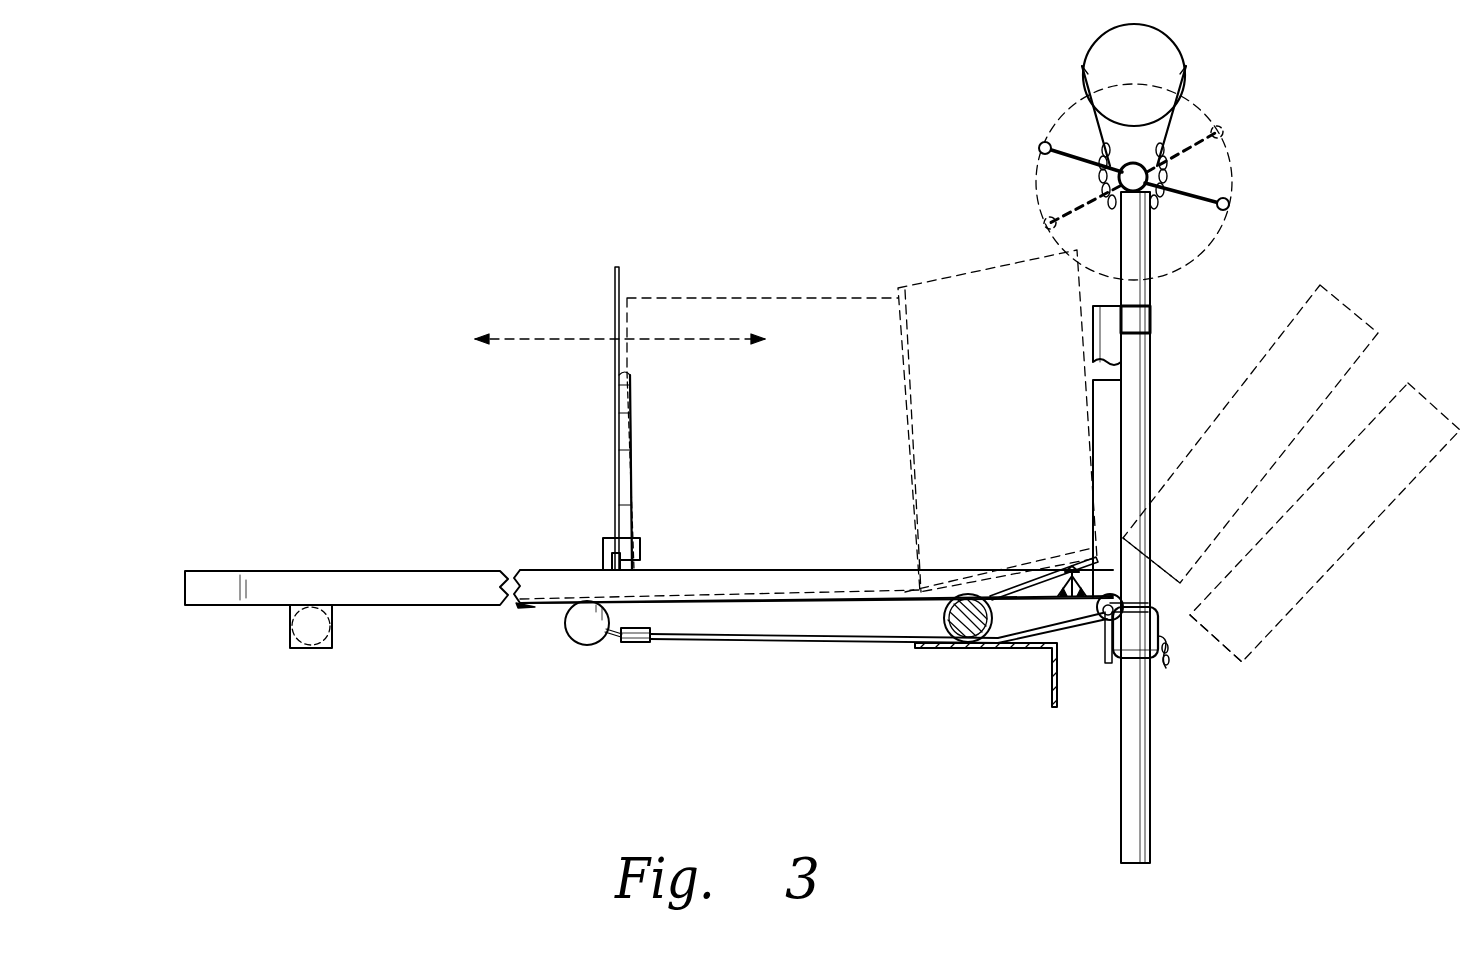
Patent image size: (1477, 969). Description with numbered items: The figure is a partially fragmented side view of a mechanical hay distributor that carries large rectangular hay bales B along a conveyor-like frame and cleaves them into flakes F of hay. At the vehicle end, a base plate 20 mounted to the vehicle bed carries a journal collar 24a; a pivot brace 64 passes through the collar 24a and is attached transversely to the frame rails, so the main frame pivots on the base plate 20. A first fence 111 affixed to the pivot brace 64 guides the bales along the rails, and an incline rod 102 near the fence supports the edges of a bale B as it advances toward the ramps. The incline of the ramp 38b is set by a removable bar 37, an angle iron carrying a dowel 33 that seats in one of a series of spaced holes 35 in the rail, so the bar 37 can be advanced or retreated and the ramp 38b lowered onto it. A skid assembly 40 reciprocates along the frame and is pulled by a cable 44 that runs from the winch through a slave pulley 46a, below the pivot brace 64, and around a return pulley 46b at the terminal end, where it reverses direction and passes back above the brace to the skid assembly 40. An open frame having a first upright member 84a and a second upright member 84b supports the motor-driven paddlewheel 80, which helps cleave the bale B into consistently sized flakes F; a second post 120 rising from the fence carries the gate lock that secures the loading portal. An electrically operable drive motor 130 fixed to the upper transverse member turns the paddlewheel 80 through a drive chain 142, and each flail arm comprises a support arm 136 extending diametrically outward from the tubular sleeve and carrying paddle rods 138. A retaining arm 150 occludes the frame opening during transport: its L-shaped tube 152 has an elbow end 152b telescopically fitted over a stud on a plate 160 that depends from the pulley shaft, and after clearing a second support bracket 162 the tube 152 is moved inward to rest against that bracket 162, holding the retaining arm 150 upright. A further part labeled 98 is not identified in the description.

The base plate 20 is at (1027, 692).
The journal collar 24a is at (918, 627).
The dowel 33 is at (1073, 584).
The holes 35 is at (1056, 598).
The removable bar 37 is at (1042, 578).
The ramp 38b is at (1002, 584).
The skid assembly 40 is at (555, 293).
The cable 44 is at (884, 656).
The slave pulley 46a is at (638, 644).
The return pulley 46b is at (1084, 624).
The pivot brace 64 is at (970, 640).
The paddlewheel 80 is at (1178, 152).
The first upright member 84a is at (1130, 845).
The second upright member 84b is at (1143, 395).
The backrest post 98 is at (609, 267).
The incline rod 102 is at (526, 610).
The first fence 111 is at (425, 601).
The second post 120 is at (1130, 465).
The drive motor 130 is at (1150, 80).
The support arm 136 is at (1204, 213).
The paddle rods 138 is at (1230, 207).
The drive chain 142 is at (1164, 184).
The retaining arm 150 is at (1178, 668).
The L-shaped tube 152 is at (1164, 612).
The elbow end 152b is at (1172, 630).
The plate 160 is at (1112, 664).
The second support bracket 162 is at (1176, 586).
The hay bale B is at (800, 296).
The flakes F is at (1348, 302).